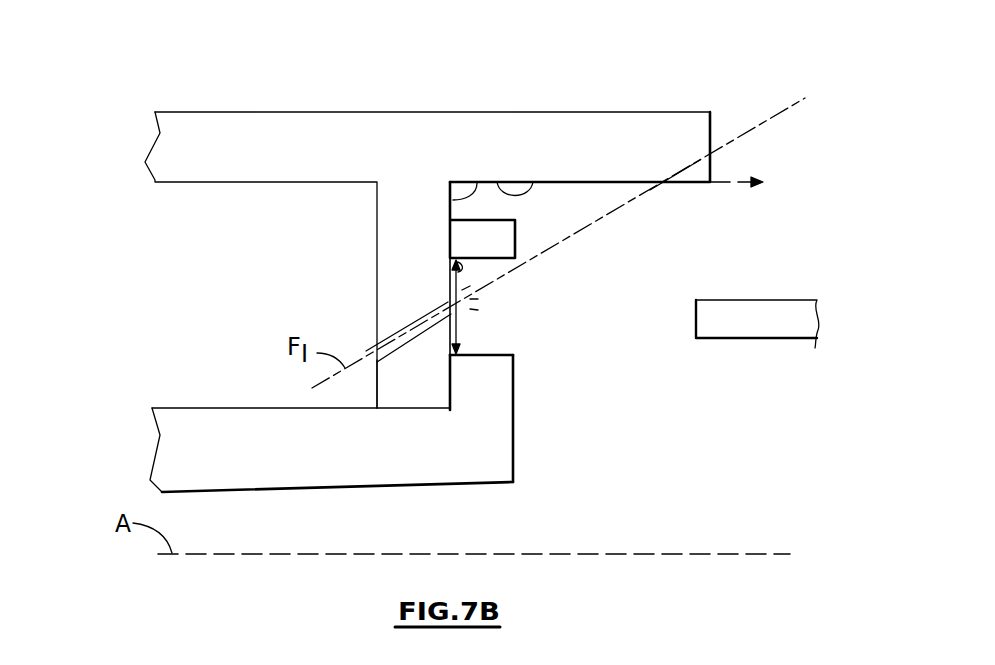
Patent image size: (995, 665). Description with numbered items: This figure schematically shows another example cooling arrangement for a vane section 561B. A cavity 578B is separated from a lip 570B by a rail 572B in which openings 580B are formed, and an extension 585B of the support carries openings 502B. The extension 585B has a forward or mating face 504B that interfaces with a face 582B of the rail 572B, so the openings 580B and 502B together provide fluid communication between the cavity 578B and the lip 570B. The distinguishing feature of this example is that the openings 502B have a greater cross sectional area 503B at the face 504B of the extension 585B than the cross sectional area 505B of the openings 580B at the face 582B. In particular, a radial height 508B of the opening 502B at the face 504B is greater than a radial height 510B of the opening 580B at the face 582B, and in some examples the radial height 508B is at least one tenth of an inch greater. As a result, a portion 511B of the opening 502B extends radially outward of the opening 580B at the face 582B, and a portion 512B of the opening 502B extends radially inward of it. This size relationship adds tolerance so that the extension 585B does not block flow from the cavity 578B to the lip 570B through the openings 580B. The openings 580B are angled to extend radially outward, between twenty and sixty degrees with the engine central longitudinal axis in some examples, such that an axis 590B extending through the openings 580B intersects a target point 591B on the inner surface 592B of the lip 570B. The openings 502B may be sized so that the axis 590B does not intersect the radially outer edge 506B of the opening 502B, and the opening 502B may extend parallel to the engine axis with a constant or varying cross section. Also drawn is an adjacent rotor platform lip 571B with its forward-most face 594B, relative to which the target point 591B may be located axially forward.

The vane section 561B is at (150, 73).
The lip 570B is at (655, 135).
The face 582B is at (477, 182).
The inner surface 592B is at (533, 182).
The axis 590B is at (765, 128).
The target point 591B is at (662, 187).
The radially outer edge 506B is at (447, 272).
The cross sectional area 503B is at (446, 290).
The radial height 510B is at (446, 307).
The portion 511B is at (468, 288).
The openings 502B is at (478, 299).
The radial height 508B is at (478, 310).
The cross sectional area 505B is at (464, 321).
The cavity 578B is at (186, 311).
The openings 580B is at (397, 334).
The portion 512B is at (440, 337).
The rail 572B is at (420, 388).
The extension 585B is at (488, 383).
The face 504B is at (452, 380).
The rotor platform lip 571B is at (762, 320).
The forward-most face 594B is at (696, 322).